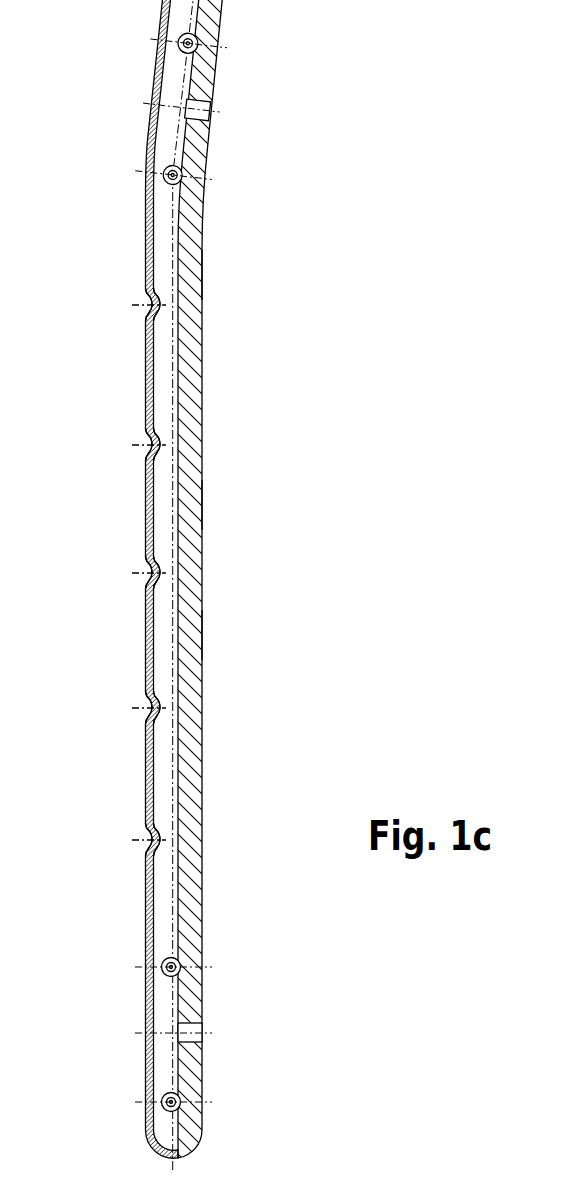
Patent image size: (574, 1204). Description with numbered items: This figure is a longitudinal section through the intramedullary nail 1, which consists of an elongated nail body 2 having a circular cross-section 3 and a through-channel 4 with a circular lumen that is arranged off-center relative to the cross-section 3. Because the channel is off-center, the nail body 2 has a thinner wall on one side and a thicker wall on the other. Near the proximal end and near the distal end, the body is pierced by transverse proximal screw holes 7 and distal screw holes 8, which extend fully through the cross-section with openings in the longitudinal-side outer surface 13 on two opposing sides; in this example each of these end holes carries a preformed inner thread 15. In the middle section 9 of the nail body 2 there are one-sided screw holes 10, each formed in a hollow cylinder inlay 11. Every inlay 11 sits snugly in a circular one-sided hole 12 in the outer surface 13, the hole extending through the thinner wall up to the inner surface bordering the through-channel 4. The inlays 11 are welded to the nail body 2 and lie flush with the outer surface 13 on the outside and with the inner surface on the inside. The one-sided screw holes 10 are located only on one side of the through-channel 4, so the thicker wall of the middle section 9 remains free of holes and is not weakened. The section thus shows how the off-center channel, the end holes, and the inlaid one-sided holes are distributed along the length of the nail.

The intramedullary nail 1 is at (86, 230).
The nail body 2 is at (190, 368).
The circular cross-section 3 is at (204, 268).
The through-channel 4 is at (165, 518).
The proximal screw holes 7 is at (180, 1100).
The distal screw holes 8 is at (198, 170).
The middle section 9 is at (204, 630).
The one-sided screw holes 10 is at (150, 305).
The hollow cylinder inlay 11 is at (150, 432).
The one-sided hole 12 is at (152, 458).
The longitudinal-side outer surface 13 is at (204, 503).
The inner thread 15 is at (162, 172).